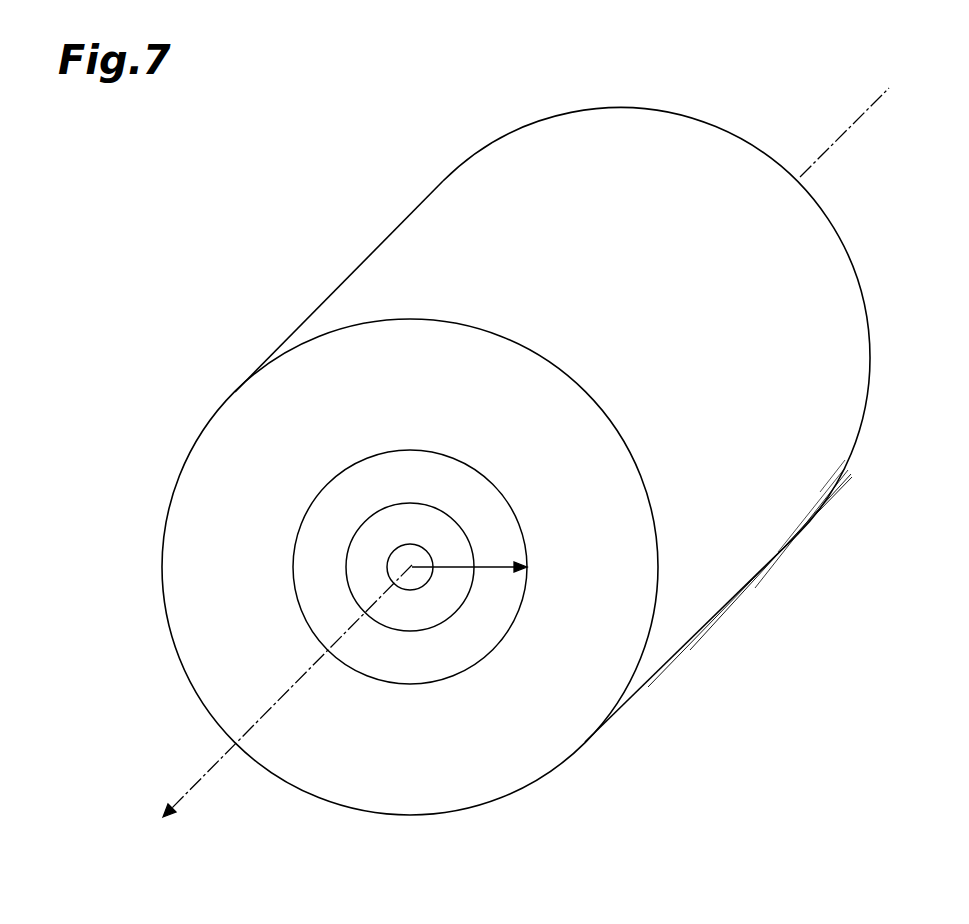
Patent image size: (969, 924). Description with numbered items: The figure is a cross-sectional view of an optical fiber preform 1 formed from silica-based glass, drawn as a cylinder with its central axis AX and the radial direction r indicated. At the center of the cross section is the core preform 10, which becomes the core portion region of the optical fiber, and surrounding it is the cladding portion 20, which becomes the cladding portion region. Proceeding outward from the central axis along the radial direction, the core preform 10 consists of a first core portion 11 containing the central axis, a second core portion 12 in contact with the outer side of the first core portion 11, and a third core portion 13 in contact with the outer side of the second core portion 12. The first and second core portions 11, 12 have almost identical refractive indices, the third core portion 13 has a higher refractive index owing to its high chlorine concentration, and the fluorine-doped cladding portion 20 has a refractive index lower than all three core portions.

The optical fiber preform 1 is at (197, 364).
The core preform 10 is at (97, 445).
The first core portion 11 is at (403, 562).
The second core portion 12 is at (367, 582).
The third core portion 13 is at (322, 600).
The cladding portion 20 is at (588, 683).